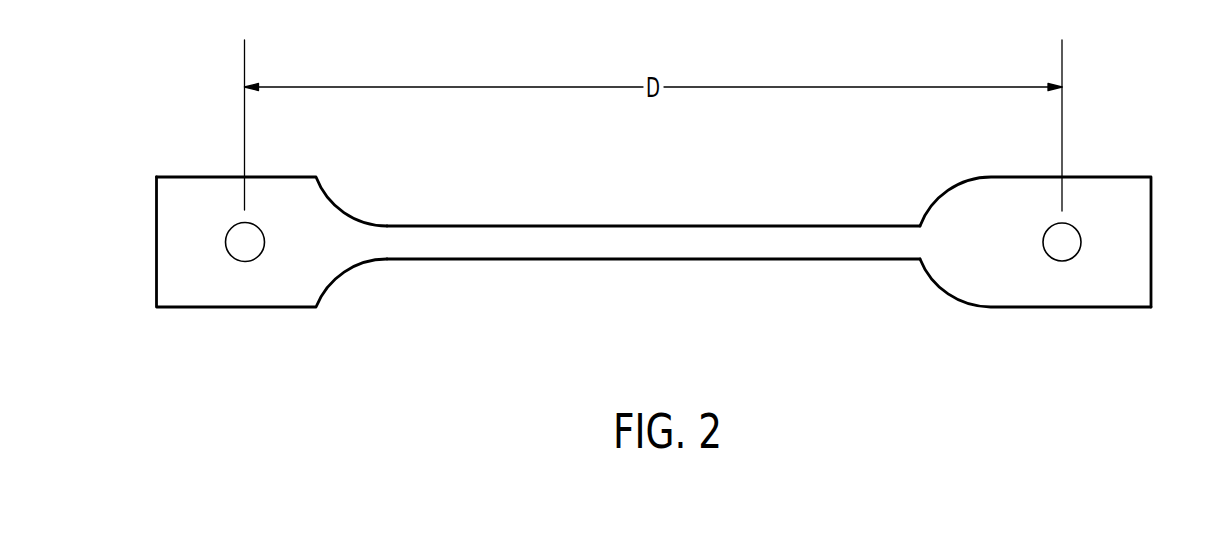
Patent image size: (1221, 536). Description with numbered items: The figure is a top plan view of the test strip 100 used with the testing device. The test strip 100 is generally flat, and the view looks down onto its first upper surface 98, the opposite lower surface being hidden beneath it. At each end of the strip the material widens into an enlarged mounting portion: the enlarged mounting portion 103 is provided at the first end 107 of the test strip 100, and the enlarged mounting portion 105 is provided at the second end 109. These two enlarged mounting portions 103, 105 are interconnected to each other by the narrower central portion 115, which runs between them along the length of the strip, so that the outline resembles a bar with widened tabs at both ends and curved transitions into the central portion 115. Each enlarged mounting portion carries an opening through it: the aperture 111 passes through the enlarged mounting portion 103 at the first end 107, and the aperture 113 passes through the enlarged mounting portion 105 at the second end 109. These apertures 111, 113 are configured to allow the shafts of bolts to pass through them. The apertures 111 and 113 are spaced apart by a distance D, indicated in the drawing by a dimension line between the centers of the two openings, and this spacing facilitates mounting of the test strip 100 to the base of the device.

The test strip 100 is at (398, 330).
The first upper surface 98 is at (858, 238).
The central portion 115 is at (522, 259).
The first end 107 is at (140, 173).
The second end 109 is at (1169, 173).
The enlarged mounting portion 103 is at (213, 331).
The enlarged mounting portion 105 is at (1094, 332).
The aperture 111 is at (255, 249).
The aperture 113 is at (1051, 249).